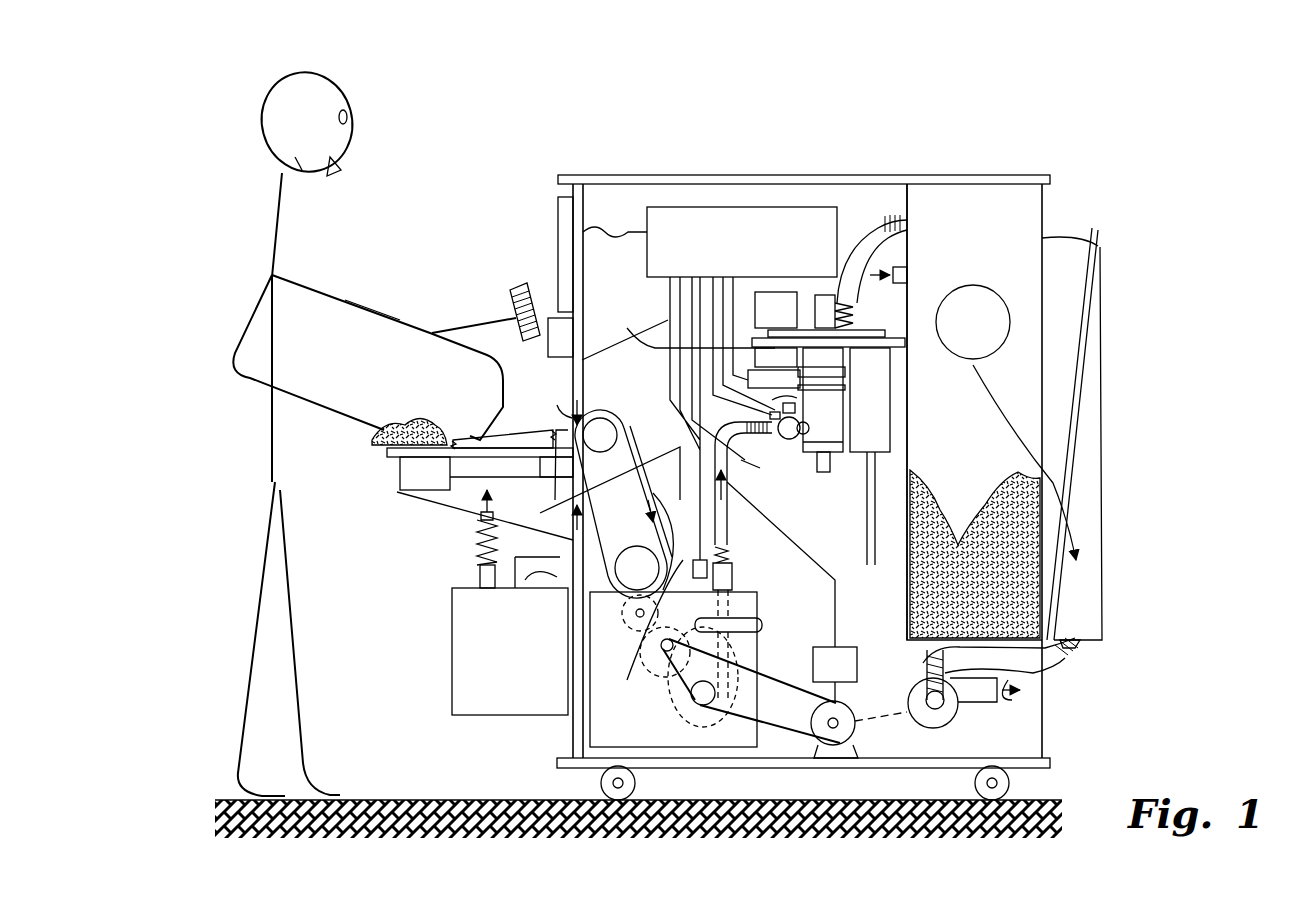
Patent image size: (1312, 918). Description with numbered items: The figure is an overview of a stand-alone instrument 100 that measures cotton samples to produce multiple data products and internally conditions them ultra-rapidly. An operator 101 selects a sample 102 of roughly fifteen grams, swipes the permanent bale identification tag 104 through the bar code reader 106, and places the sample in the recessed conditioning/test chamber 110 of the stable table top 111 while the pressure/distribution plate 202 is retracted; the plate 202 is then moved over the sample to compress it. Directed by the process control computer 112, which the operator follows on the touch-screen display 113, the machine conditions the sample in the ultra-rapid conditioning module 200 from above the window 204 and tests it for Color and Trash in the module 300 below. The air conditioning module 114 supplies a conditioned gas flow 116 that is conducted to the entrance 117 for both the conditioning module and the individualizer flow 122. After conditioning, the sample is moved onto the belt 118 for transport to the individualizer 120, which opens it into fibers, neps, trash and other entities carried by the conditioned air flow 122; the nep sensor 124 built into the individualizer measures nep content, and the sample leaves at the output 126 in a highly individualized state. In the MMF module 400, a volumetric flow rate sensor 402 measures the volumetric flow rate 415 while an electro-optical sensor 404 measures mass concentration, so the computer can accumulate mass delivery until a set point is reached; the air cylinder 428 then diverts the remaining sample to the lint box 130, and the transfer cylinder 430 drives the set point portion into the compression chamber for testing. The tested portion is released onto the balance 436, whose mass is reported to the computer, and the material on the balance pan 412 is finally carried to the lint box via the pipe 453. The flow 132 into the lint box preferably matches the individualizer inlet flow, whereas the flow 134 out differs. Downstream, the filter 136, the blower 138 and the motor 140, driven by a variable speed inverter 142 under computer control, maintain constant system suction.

The instrument 100 is at (562, 140).
The operator 101 is at (340, 72).
The sample 102 is at (412, 428).
The permanent bale identification tag 104 is at (512, 289).
The bar code reader 106 is at (547, 318).
The recessed conditioning/test chamber 110 is at (455, 467).
The stable table top 111 is at (388, 455).
The process control computer 112 is at (735, 207).
The touch-screen display 113 is at (558, 212).
The air conditioning module 114 is at (462, 578).
The conditioned gas flow 116 is at (530, 578).
The entrance 117 is at (560, 410).
The belt 118 is at (648, 443).
The individualizer 120 is at (582, 728).
The conditioned air flow 122 is at (640, 660).
The nep sensor 124 is at (762, 630).
The output of individualizer 126 is at (743, 537).
The lint box 130 is at (1042, 203).
The flow into lint box 132 is at (913, 216).
The flow out of lint box 134 is at (1022, 710).
The filter 136 is at (1077, 280).
The blower 138 is at (960, 725).
The motor 140 is at (870, 748).
The variable speed inverter 142 is at (857, 660).
The ultra-rapid conditioning module 200 is at (465, 405).
The pressure/distribution plate 202 is at (395, 318).
The window 204 is at (460, 493).
The Color and Trash module 300 is at (447, 513).
The MMF module 400 is at (782, 270).
The volumetric flow rate sensor 402 is at (780, 398).
The electro-optical sensor 404 is at (782, 442).
The balance pan 412 is at (689, 324).
The volumetric flow rate 415 is at (727, 482).
The air cylinder 428 is at (823, 475).
The transfer cylinder 430 is at (888, 535).
The balance 436 is at (767, 382).
The pipe 453 is at (866, 198).